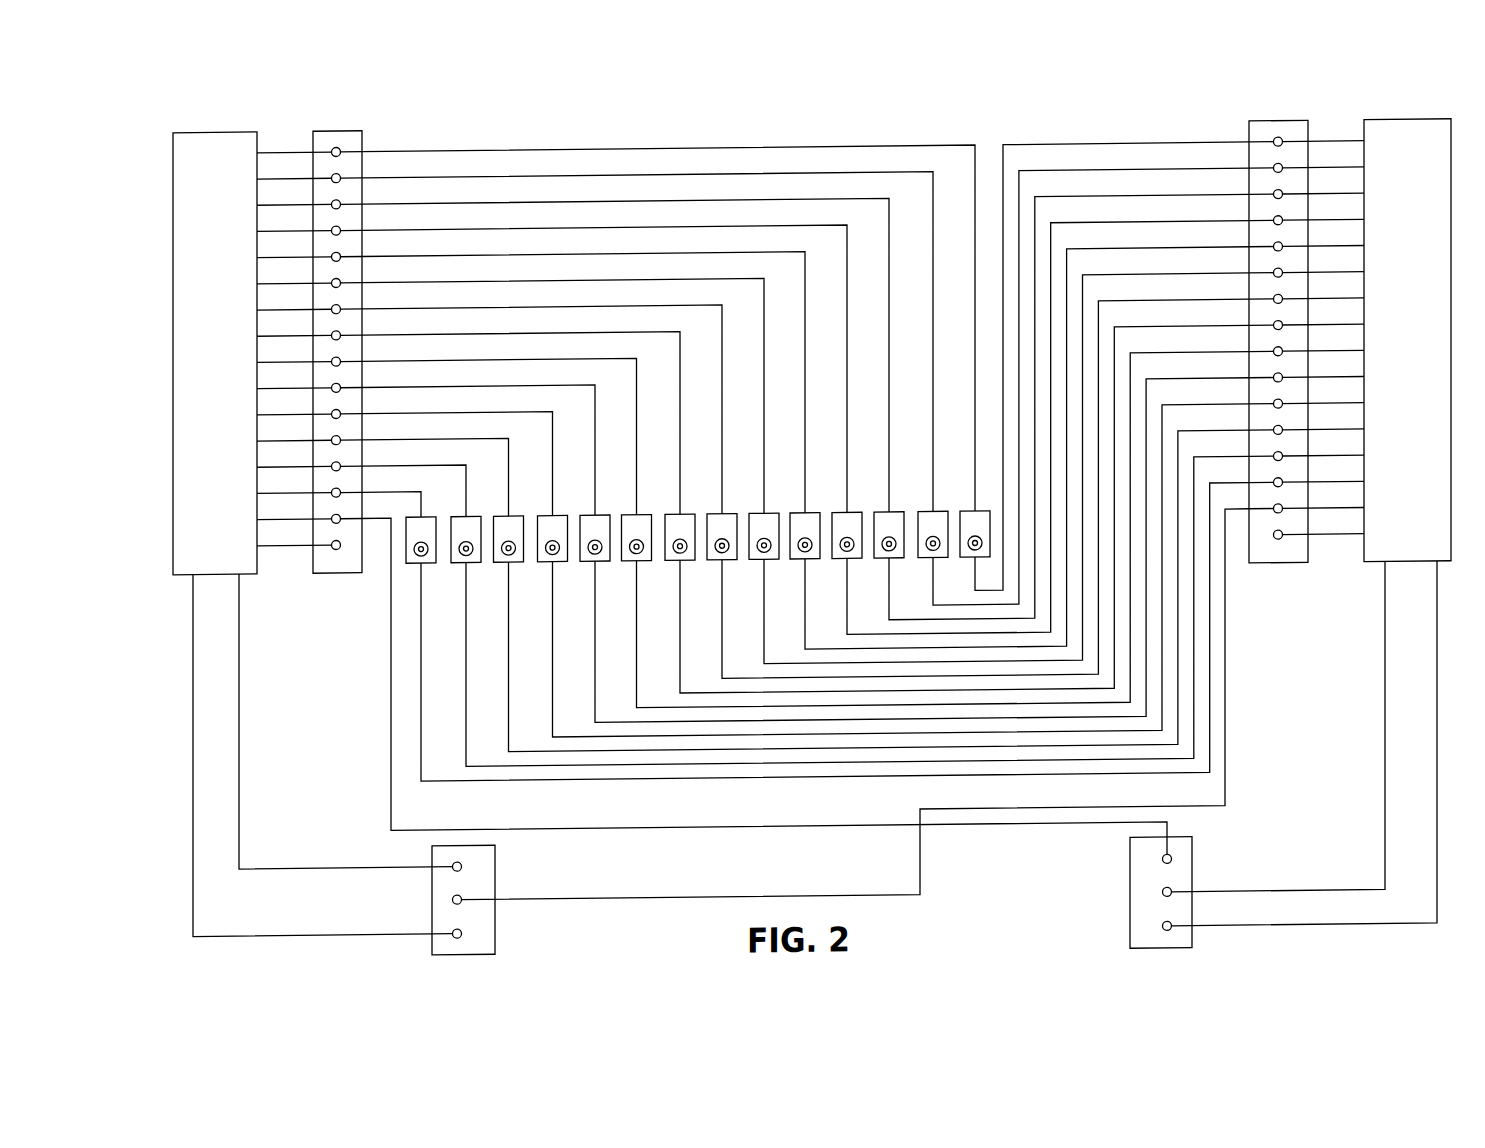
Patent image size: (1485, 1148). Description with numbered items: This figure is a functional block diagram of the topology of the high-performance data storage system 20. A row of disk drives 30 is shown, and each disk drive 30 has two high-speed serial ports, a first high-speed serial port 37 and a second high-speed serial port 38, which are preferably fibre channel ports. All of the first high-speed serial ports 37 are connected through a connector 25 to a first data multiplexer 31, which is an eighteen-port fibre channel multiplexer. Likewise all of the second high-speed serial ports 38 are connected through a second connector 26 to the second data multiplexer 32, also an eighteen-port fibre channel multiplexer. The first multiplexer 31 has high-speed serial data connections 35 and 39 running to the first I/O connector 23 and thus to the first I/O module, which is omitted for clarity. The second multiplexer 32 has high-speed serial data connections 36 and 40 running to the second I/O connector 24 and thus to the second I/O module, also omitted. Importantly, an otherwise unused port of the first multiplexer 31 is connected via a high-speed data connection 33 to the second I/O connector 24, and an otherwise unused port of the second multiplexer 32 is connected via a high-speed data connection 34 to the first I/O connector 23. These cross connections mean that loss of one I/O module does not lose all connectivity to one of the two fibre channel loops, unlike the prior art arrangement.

The high-performance data storage system 20 is at (596, 114).
The first I/O connector 23 is at (430, 890).
The second I/O connector 24 is at (1193, 867).
The connector 25 is at (338, 131).
The second connector 26 is at (1265, 128).
The disk drive 30 is at (766, 519).
The first data multiplexer 31 is at (224, 277).
The second data multiplexer 32 is at (1422, 279).
The high-speed data connection 33 is at (390, 642).
The high-speed data connection 34 is at (1228, 745).
The high-speed serial data connection 35 is at (240, 705).
The high-speed serial data connection 36 is at (1383, 701).
The first high-speed serial port 37 is at (950, 150).
The second high-speed serial port 38 is at (975, 584).
The high-speed serial data connection 39 is at (193, 715).
The high-speed serial data connection 40 is at (1437, 712).